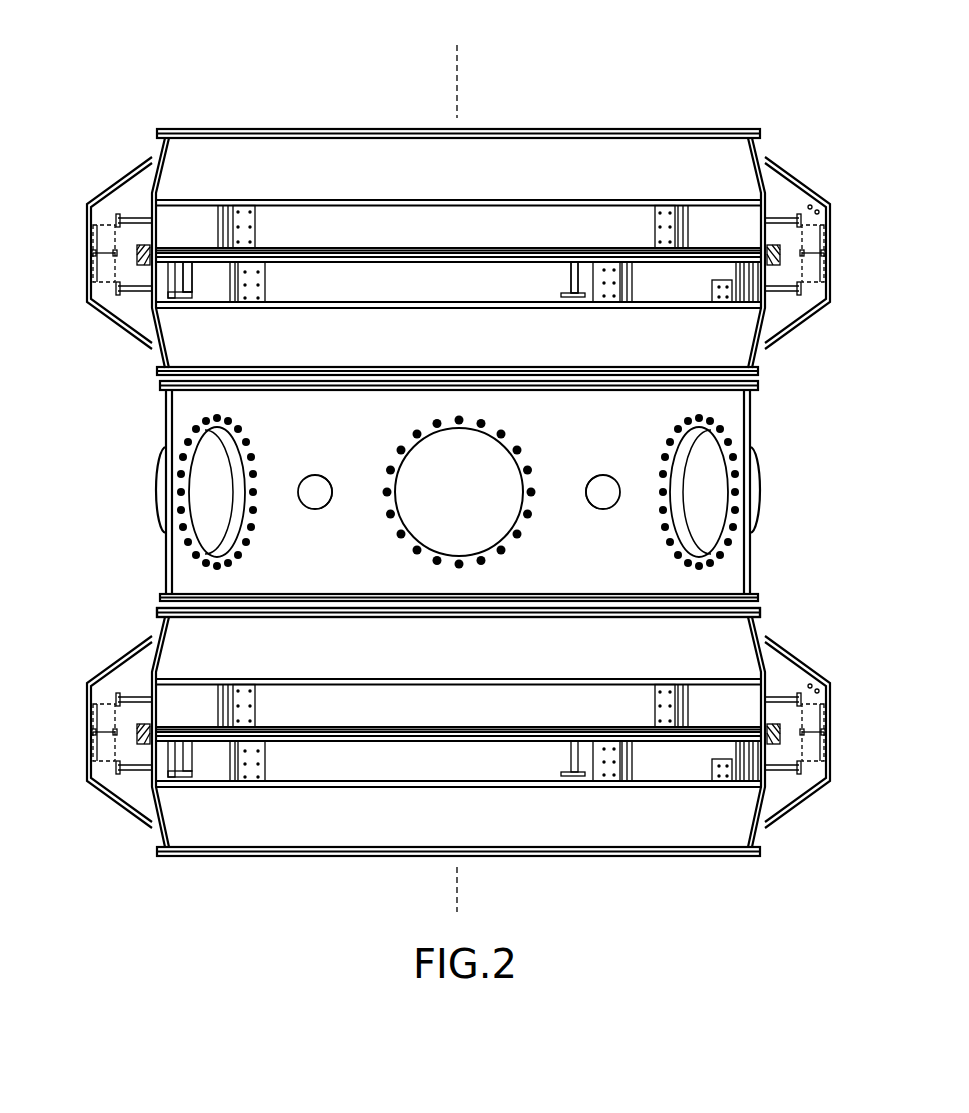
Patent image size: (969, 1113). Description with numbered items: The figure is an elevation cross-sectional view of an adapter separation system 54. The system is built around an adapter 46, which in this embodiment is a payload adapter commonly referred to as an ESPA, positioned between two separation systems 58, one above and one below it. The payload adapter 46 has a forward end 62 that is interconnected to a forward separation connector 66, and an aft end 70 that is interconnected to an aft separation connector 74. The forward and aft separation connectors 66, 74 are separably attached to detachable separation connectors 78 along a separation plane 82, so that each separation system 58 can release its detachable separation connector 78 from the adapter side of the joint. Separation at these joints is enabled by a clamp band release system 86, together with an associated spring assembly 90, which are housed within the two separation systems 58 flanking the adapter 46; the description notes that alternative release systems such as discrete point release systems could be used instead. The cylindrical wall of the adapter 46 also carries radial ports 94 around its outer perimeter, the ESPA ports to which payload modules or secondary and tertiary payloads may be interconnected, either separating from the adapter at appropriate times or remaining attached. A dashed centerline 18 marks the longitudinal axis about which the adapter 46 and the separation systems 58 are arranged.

The longitudinal axis 18 is at (458, 94).
The adapter 46 is at (72, 388).
The adapter separation system 54 is at (715, 68).
The separation systems 58 is at (72, 122).
The forward end 62 is at (750, 390).
The forward separation connector 66 is at (757, 350).
The aft end 70 is at (750, 598).
The aft separation connector 74 is at (752, 616).
The detachable separation connectors 78 is at (762, 138).
The separation plane 82 is at (700, 253).
The clamp band release system 86 is at (112, 195).
The spring assembly 90 is at (192, 274).
The radial ports 94 is at (735, 493).